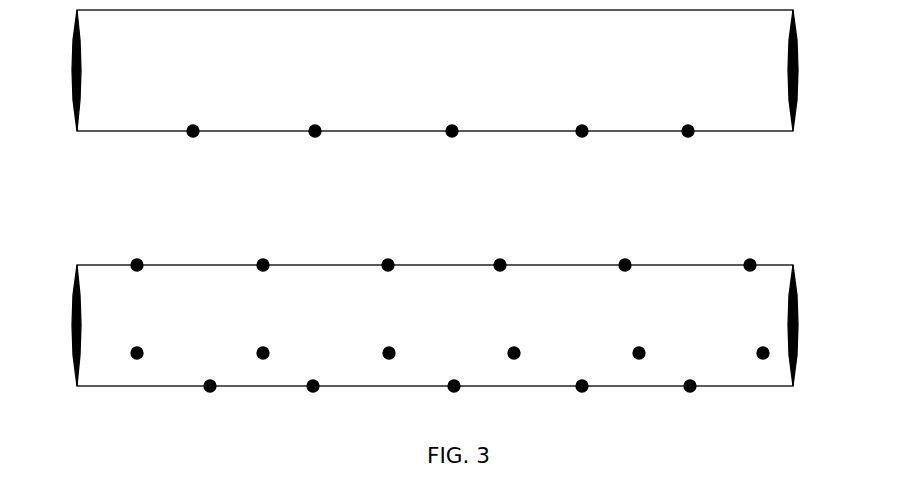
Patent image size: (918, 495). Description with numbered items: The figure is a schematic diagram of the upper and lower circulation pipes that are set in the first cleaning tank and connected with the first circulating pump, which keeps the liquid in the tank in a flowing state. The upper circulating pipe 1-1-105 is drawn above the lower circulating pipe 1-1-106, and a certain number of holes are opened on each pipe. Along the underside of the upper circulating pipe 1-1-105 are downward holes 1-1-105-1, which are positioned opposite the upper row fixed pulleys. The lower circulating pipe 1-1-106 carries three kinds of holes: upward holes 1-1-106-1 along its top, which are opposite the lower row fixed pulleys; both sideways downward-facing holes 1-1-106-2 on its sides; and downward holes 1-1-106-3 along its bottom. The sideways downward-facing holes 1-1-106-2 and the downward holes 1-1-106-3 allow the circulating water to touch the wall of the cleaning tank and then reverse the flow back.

The upper circulating pipe 1-1-105 is at (435, 73).
The downward holes 1-1-105-1 is at (452, 137).
The lower circulating pipe 1-1-106 is at (435, 325).
The upward holes 1-1-106-1 is at (263, 259).
The both sideways downward-facing holes 1-1-106-2 is at (516, 347).
The downward holes 1-1-106-3 is at (691, 380).